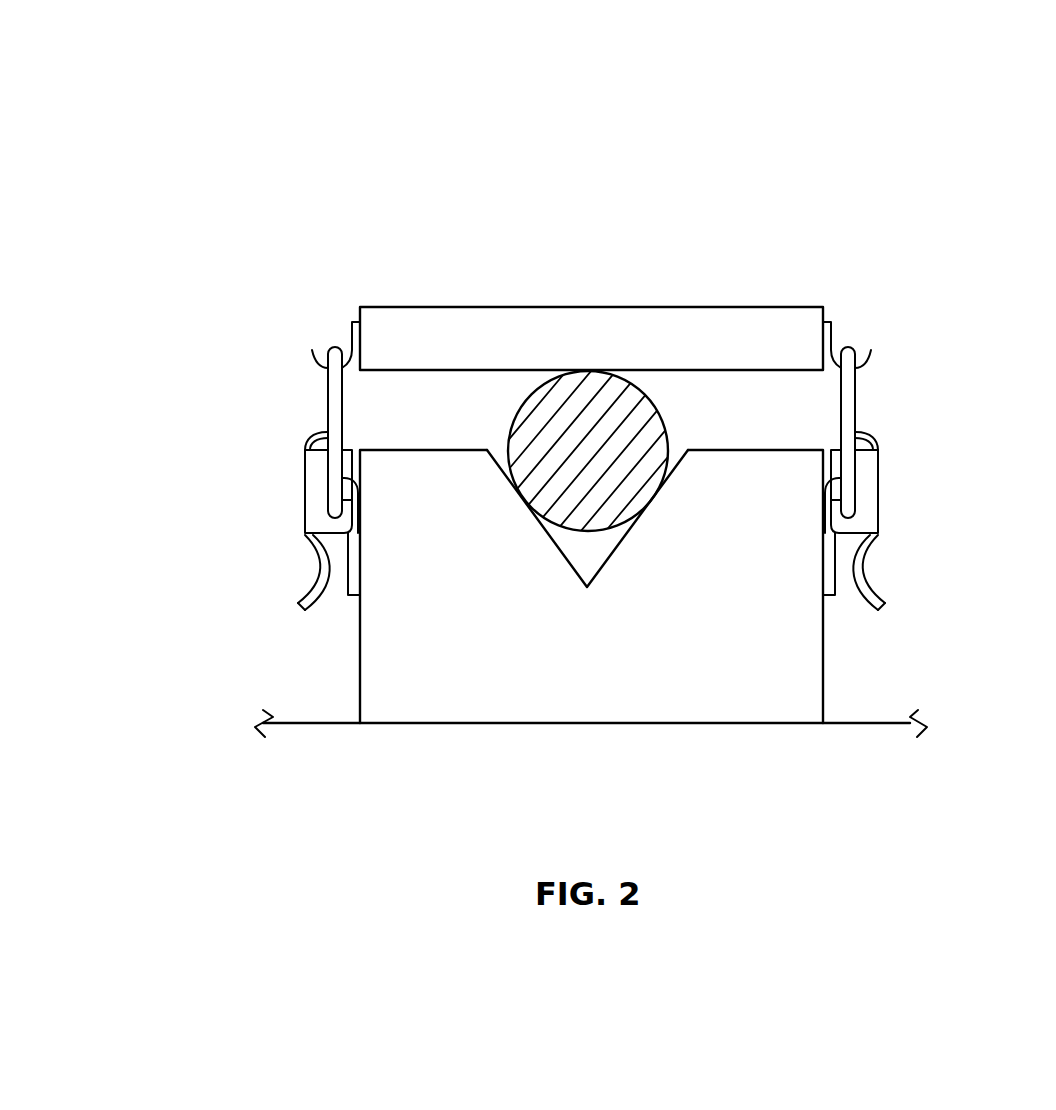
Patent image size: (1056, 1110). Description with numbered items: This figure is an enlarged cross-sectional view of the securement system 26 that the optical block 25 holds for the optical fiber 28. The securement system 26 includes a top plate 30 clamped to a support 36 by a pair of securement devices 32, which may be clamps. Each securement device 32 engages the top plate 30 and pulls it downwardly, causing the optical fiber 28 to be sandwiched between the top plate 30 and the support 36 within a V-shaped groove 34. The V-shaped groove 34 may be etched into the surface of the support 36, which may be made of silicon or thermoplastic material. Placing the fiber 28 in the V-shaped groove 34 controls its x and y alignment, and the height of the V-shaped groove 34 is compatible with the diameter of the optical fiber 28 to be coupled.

The optical block 25 is at (865, 742).
The securement system 26 is at (848, 168).
The optical fiber 28 is at (535, 382).
The top plate 30 is at (734, 322).
The securement devices 32 is at (303, 482).
The V-shaped groove 34 is at (555, 544).
The support 36 is at (795, 642).